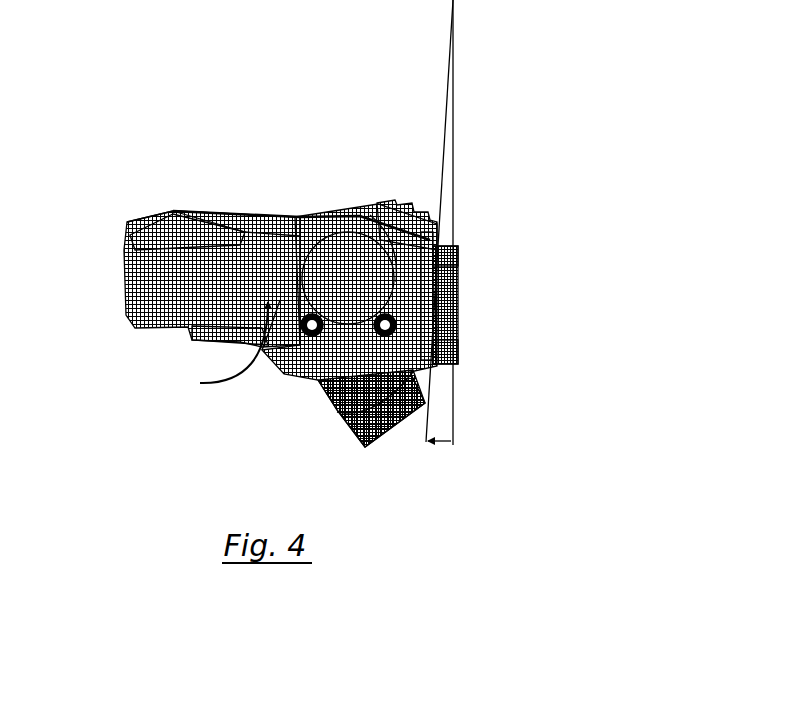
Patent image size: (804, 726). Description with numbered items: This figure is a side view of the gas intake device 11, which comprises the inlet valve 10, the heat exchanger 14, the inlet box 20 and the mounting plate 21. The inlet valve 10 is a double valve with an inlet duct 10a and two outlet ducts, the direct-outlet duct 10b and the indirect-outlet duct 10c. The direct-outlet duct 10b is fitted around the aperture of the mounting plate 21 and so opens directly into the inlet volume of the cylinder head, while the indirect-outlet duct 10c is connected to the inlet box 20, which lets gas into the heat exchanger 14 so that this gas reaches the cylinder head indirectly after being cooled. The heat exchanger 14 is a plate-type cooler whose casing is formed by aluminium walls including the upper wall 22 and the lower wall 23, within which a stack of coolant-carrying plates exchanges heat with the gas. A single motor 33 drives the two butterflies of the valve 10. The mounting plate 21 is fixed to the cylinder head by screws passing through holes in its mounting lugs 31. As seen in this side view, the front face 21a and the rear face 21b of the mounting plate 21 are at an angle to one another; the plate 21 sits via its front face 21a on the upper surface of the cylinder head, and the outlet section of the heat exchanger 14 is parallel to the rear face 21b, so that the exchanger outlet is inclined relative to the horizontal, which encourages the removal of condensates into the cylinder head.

The inlet valve 10 is at (349, 327).
The inlet duct 10a is at (363, 435).
The direct-outlet duct 10b is at (359, 211).
The indirect-outlet duct 10c is at (238, 368).
The gas intake device 11 is at (262, 49).
The heat exchanger 14 is at (187, 195).
The inlet box 20 is at (172, 293).
The mounting plate 21 is at (549, 298).
The front face 21a is at (522, 335).
The rear face 21b is at (500, 262).
The upper wall 22 is at (301, 187).
The lower wall 23 is at (182, 369).
The mounting lugs 31 is at (407, 183).
The motor 33 is at (329, 238).